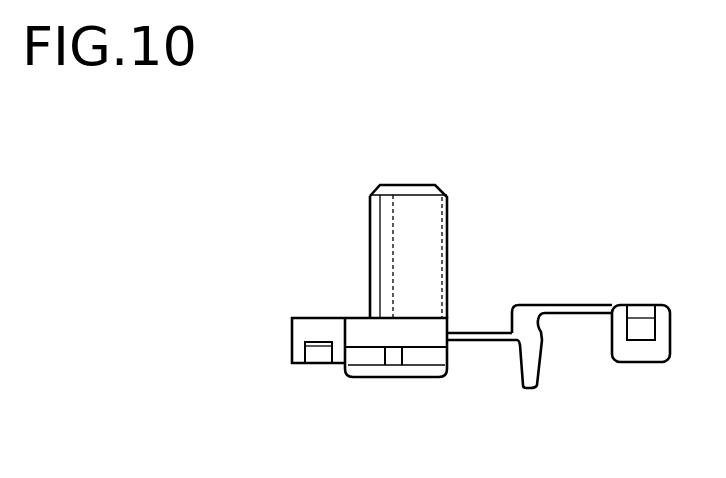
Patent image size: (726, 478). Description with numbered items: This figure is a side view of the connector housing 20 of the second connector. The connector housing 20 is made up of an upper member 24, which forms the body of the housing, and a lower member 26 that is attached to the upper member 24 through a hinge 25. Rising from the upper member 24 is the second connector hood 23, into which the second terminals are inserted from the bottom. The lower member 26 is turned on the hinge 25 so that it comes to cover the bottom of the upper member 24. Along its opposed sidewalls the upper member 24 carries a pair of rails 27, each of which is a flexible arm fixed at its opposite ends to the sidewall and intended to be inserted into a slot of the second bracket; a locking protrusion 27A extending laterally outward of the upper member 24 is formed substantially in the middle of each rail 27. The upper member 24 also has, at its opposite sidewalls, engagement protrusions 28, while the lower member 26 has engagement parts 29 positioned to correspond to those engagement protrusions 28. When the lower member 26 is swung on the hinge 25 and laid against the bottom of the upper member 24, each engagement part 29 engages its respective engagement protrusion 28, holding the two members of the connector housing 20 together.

The connector housing 20 is at (564, 196).
The second connector hood 23 is at (406, 194).
The upper member 24 is at (292, 338).
The hinge 25 is at (490, 333).
The lower member 26 is at (580, 307).
The rail 27 is at (364, 358).
The locking protrusion 27A is at (396, 358).
The engagement protrusion 28 is at (315, 356).
The engagement part 29 is at (637, 347).